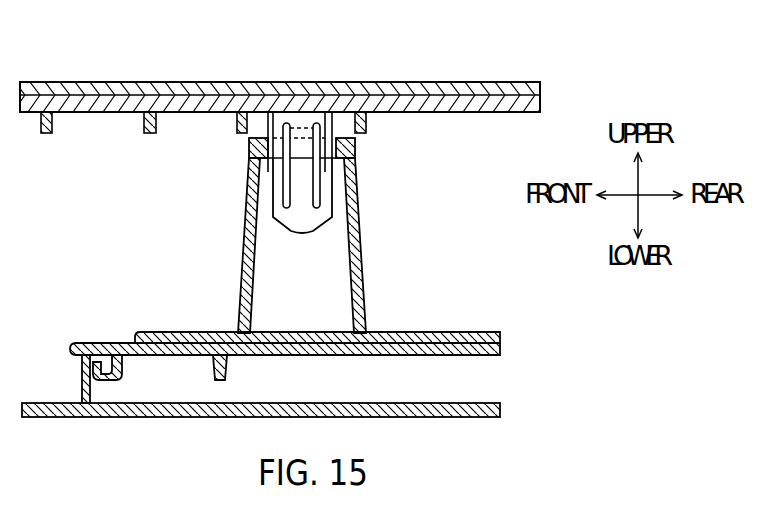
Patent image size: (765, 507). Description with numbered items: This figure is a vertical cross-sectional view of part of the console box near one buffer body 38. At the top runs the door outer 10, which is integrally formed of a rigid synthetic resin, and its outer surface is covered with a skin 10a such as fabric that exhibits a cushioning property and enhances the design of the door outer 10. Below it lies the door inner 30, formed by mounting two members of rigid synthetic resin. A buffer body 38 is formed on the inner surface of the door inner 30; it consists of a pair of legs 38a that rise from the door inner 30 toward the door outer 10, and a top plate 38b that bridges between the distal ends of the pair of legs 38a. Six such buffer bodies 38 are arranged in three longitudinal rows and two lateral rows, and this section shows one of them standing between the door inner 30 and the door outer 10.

The door outer 10 is at (131, 79).
The skin 10a is at (208, 90).
The door inner 30 is at (455, 332).
The buffer body 38 is at (302, 245).
The legs 38a is at (242, 253).
The top plate 38b is at (263, 140).